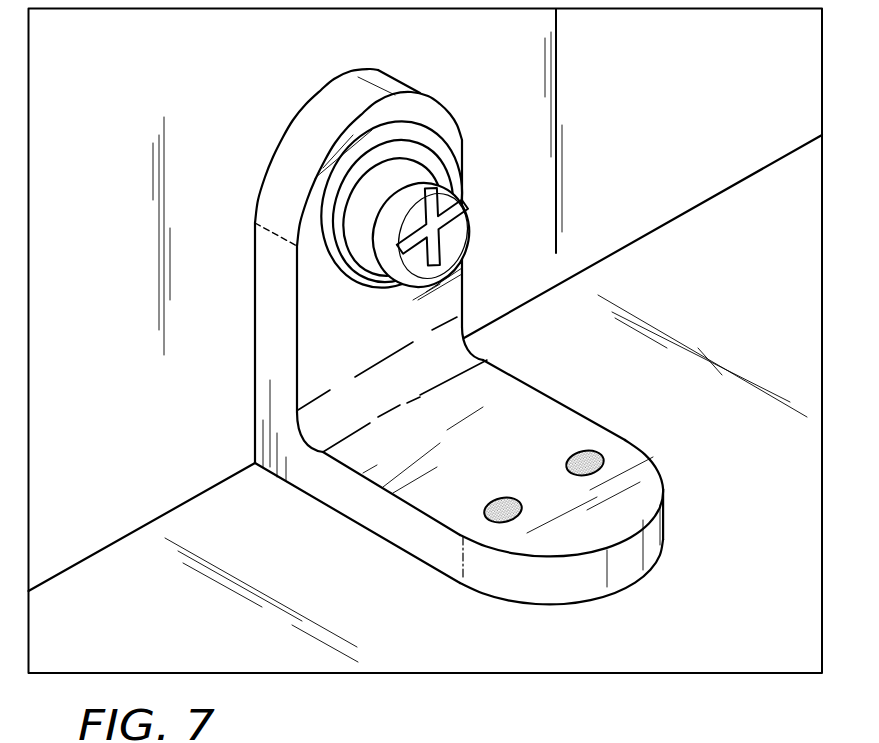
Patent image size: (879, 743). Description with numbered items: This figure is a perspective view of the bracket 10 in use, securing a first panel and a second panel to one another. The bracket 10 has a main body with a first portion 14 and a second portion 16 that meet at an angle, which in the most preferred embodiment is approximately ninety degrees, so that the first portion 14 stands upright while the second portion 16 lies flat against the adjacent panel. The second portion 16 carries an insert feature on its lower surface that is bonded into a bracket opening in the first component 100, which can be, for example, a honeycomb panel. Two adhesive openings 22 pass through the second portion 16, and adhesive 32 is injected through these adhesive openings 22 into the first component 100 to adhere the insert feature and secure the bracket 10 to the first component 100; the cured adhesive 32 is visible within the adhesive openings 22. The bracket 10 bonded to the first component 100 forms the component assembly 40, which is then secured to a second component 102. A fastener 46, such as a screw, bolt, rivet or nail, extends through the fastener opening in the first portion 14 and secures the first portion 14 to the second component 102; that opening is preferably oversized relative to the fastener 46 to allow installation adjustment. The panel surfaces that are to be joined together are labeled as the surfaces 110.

The bracket 10 is at (413, 330).
The first portion 14 is at (430, 113).
The second portion 16 is at (621, 567).
The adhesive openings 22 is at (607, 463).
The adhesive 32 is at (585, 460).
The component assembly 40 is at (413, 344).
The fastener 46 is at (453, 195).
The first component 100 is at (760, 280).
The second component 102 is at (775, 160).
The surfaces to be joined 110 is at (702, 118).